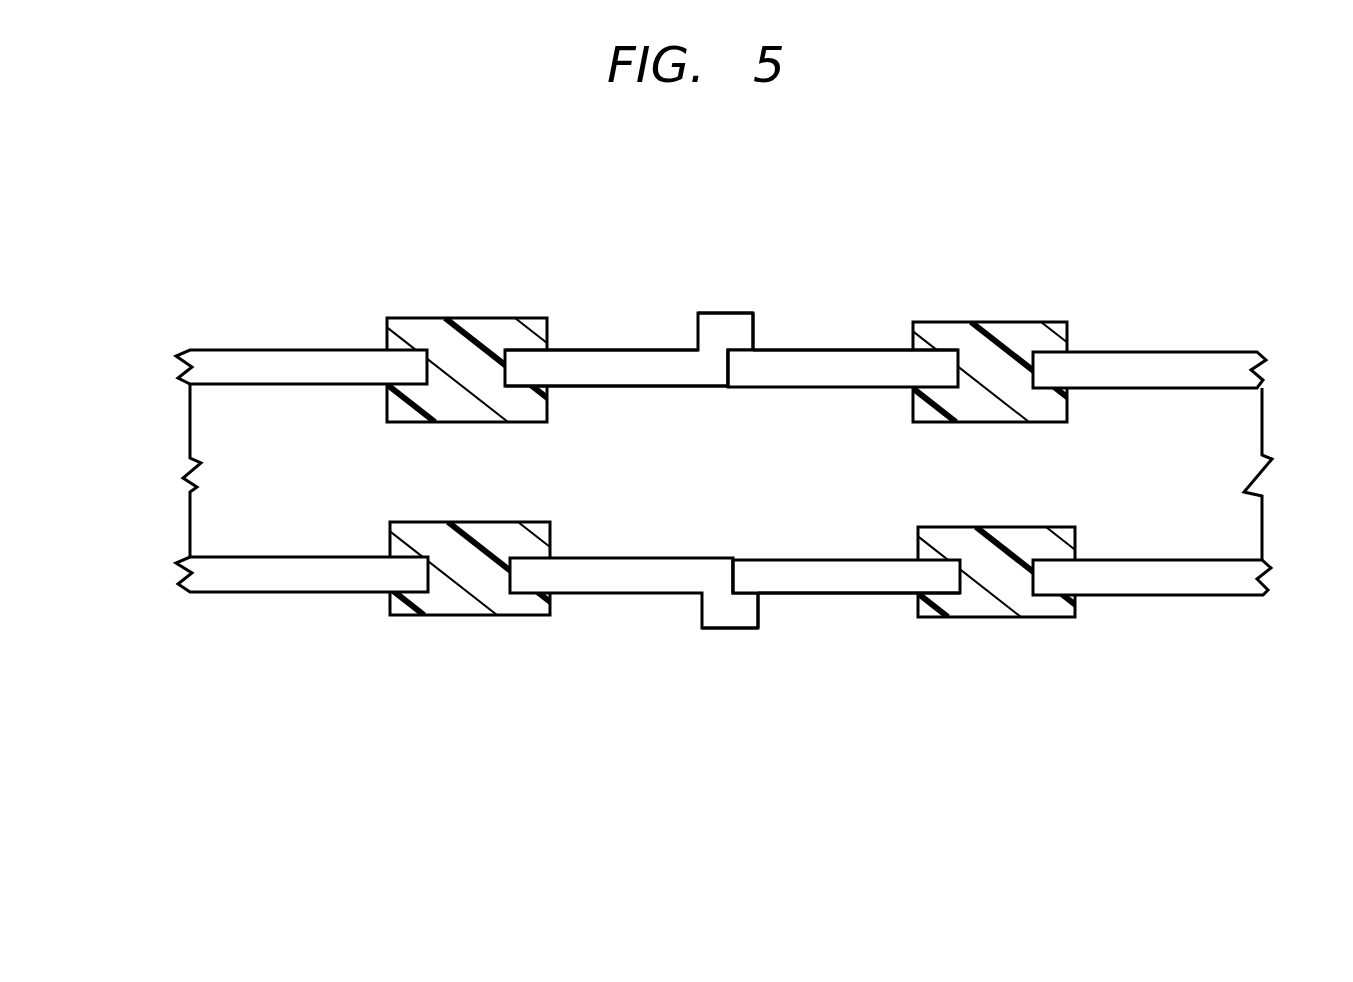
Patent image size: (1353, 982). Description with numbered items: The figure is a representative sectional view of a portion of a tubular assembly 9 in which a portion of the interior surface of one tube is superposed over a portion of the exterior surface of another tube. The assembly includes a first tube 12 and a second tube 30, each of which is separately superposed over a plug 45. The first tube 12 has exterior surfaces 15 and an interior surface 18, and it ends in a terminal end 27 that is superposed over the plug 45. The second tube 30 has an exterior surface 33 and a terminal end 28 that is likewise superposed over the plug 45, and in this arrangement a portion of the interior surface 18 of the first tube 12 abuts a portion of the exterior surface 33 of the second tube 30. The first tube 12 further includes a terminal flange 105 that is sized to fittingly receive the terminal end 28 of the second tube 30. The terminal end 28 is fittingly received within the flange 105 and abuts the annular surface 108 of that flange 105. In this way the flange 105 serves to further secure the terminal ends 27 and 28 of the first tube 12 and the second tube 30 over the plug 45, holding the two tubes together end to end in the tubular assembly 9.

The tubular assembly 9 is at (727, 535).
The first tube 12 is at (297, 350).
The exterior surfaces 15 is at (602, 350).
The interior surface 18 is at (642, 383).
The terminal end 27 is at (757, 324).
The terminal end 28 is at (730, 354).
The second tube 30 is at (878, 352).
The exterior surface 33 is at (810, 350).
The plug 45 is at (206, 508).
The terminal flange 105 is at (720, 313).
The annular surface 108 is at (727, 374).